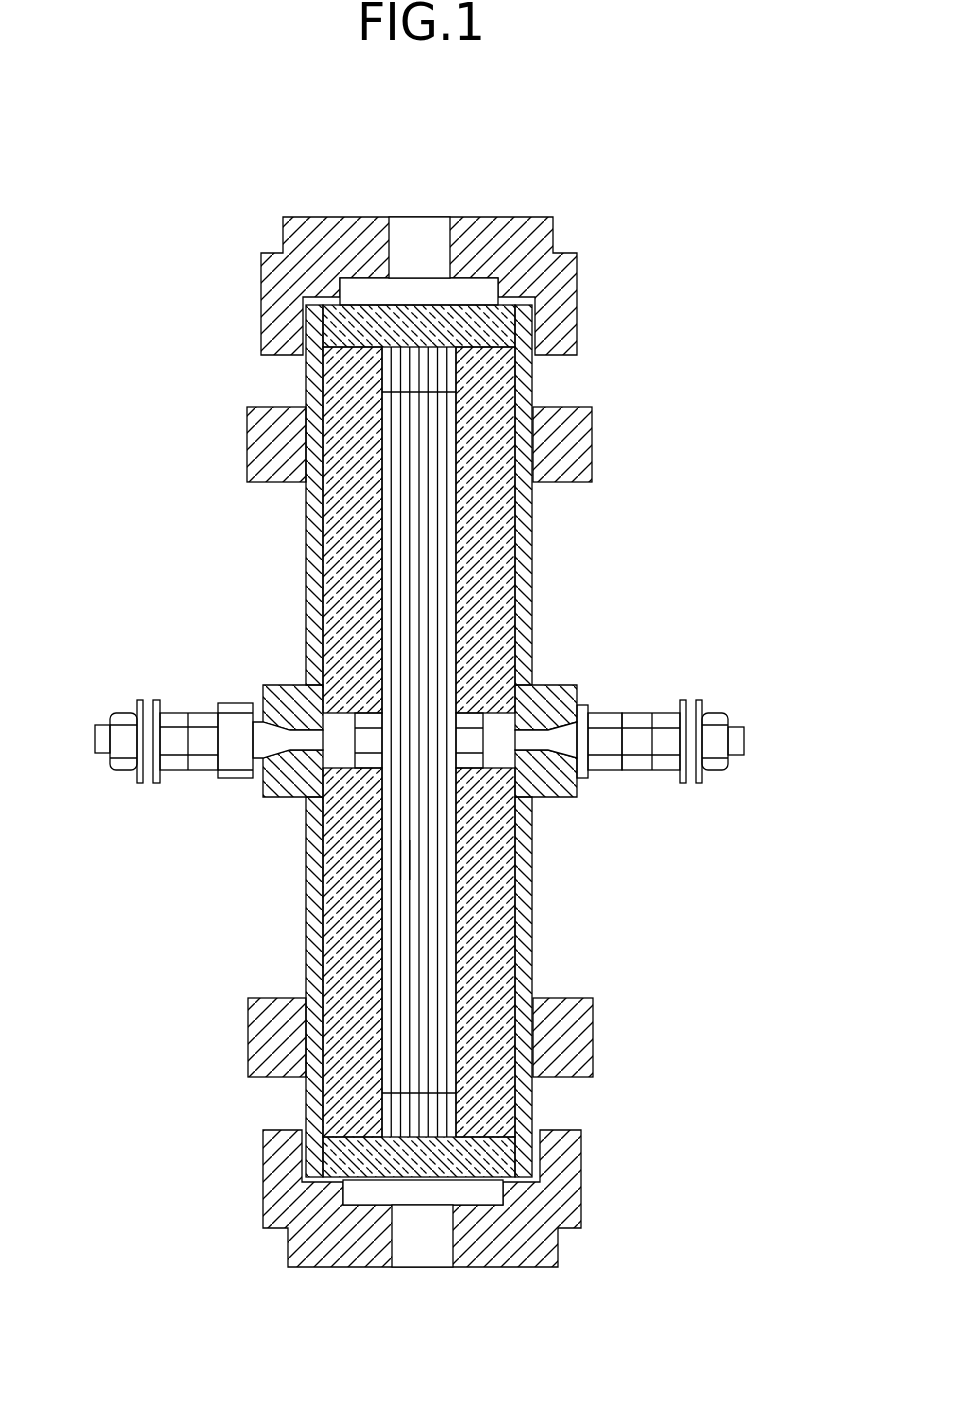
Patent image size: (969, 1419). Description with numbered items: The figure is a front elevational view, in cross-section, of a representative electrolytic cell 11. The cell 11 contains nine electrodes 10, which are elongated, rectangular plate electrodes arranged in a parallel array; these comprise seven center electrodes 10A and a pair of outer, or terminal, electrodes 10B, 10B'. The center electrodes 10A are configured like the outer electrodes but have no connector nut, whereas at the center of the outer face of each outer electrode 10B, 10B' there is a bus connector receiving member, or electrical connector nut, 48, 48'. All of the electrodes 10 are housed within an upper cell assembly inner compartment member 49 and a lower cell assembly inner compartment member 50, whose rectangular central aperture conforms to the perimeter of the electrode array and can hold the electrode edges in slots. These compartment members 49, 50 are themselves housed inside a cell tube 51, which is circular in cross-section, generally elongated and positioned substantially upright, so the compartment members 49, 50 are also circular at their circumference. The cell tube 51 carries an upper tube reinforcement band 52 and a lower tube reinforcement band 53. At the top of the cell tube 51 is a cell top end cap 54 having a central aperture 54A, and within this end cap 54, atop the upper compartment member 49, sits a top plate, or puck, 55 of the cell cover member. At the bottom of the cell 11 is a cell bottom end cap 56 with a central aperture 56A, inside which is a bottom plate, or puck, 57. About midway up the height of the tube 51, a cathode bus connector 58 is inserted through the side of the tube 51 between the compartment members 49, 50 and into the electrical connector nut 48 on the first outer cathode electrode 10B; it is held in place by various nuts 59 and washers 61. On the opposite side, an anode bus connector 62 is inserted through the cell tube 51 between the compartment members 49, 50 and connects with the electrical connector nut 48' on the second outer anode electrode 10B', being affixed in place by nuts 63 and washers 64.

The cell 11 is at (439, 709).
The cell top end cap 54 is at (565, 290).
The central aperture 54A is at (412, 240).
The top plate, or puck 55 is at (490, 328).
The upper tube reinforcement band 52 is at (580, 450).
The upper cell assembly inner compartment member 49 is at (490, 658).
The lower cell assembly inner compartment member 50 is at (495, 915).
The electrodes 10 is at (440, 633).
The center electrodes 10A is at (403, 862).
The outer electrode 10B is at (312, 742).
The outer electrode 10B' is at (547, 742).
The electrical connector nut 48 is at (303, 711).
The electrical connector nut 48' is at (531, 766).
The cathode bus connector 58 is at (105, 740).
The nuts 59 is at (245, 702).
The washers 61 is at (139, 783).
The anode bus connector 62 is at (745, 742).
The nuts 63 is at (716, 720).
The washers 64 is at (703, 783).
The cell tube 51 is at (305, 1042).
The lower tube reinforcement band 53 is at (580, 1049).
The bottom plate, or puck 57 is at (368, 1160).
The cell bottom end cap 56 is at (568, 1202).
The central aperture 56A is at (422, 1238).